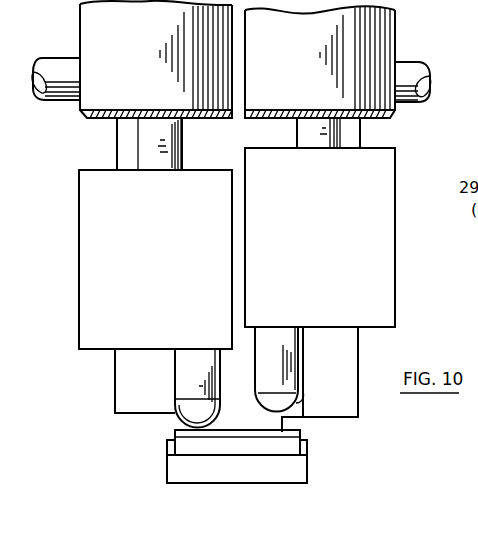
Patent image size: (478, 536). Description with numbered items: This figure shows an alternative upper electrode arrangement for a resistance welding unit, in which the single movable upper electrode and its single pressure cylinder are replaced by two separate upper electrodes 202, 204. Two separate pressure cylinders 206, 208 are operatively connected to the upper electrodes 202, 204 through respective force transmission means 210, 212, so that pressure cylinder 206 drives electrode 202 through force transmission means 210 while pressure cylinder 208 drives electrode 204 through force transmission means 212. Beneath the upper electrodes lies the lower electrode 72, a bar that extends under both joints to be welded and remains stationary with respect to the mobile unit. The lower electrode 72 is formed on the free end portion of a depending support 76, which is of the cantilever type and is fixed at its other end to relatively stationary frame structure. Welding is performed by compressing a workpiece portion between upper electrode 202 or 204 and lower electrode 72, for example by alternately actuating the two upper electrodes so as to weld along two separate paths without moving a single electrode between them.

The pressure cylinder 206 is at (97, 101).
The pressure cylinder 208 is at (394, 114).
The force transmission means 210 is at (155, 259).
The force transmission means 212 is at (320, 237).
The upper electrode 202 is at (186, 379).
The upper electrode 204 is at (278, 366).
The lower electrode 72 is at (283, 445).
The depending support 76 is at (167, 456).